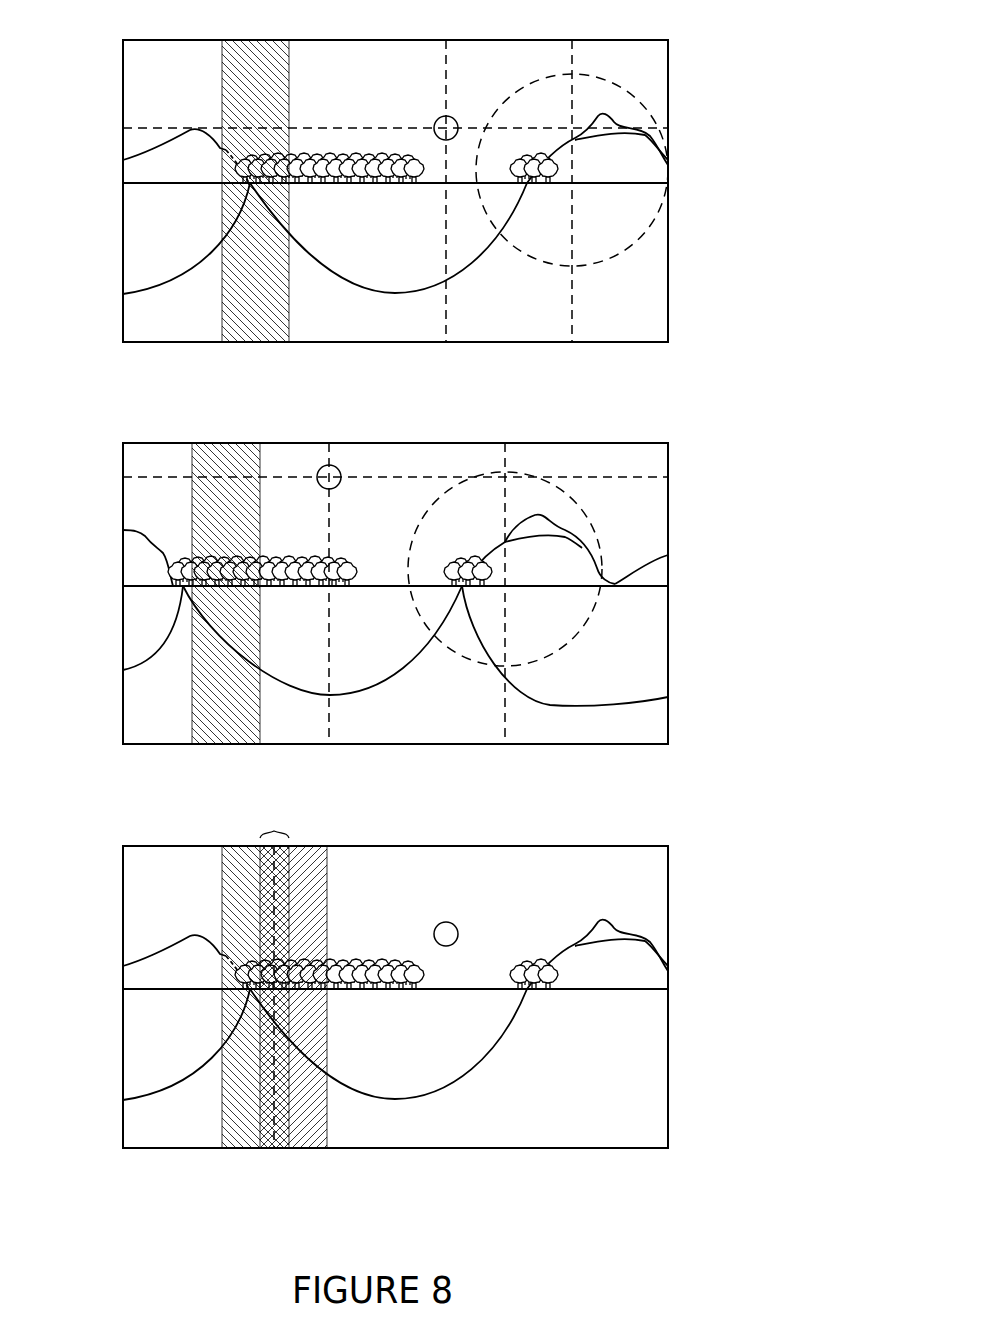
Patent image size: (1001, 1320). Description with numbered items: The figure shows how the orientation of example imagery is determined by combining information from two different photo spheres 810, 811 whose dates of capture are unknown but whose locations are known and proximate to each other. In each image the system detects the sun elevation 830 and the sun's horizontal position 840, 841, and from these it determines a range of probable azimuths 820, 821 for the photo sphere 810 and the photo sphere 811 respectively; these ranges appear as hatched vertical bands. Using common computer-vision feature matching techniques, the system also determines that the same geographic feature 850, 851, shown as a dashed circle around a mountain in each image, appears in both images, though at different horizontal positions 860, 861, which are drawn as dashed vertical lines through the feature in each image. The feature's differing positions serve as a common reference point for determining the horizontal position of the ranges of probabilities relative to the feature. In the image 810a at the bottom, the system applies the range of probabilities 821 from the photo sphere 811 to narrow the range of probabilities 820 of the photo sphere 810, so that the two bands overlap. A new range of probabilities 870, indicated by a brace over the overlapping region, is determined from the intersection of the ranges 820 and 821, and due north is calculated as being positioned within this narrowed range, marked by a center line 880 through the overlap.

The photo sphere 810 is at (123, 66).
The photo sphere 811 is at (123, 468).
The image 810a is at (123, 873).
The range of probable azimuths 820 is at (222, 58).
The range of probable azimuths 821 is at (192, 462).
The sun elevation 830 is at (123, 135).
The horizontal position 840 is at (440, 62).
The horizontal position 841 is at (323, 453).
The geographic feature 850 is at (637, 93).
The circular region in second image 851 is at (597, 538).
The horizontal position 860 is at (566, 63).
The horizontal position 861 is at (500, 458).
The new range of probabilities 870 is at (274, 831).
The center line of overlap region 880 is at (265, 1128).